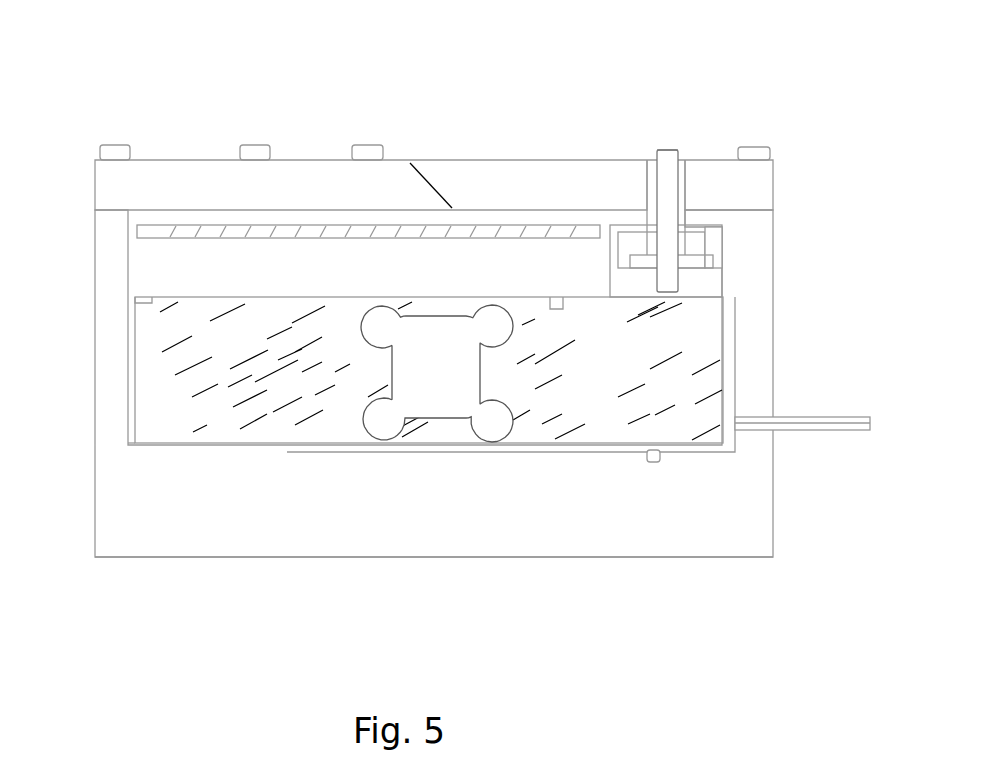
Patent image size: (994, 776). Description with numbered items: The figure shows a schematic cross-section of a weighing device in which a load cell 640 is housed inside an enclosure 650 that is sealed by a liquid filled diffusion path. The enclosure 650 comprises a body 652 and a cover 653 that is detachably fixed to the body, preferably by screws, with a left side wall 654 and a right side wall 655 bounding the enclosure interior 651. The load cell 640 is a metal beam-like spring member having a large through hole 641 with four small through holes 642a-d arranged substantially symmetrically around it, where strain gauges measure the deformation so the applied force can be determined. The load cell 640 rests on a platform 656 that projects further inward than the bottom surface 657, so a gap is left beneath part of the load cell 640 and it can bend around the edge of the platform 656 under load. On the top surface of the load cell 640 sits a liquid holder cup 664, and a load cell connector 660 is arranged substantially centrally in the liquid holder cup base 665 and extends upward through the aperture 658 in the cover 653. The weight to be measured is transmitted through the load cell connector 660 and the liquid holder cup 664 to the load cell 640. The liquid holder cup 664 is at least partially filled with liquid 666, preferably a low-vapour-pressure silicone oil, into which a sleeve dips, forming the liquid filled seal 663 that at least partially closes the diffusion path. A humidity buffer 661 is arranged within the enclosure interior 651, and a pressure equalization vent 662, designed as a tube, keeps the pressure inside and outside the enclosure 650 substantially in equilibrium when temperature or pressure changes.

The enclosure 650 is at (437, 98).
The load cell 640 is at (150, 297).
The large through hole 641 is at (432, 410).
The small through holes 642a-d is at (500, 410).
The enclosure interior 651 is at (269, 282).
The body 652 is at (237, 557).
The cover 653 is at (298, 160).
The left side wall 654 is at (95, 320).
The right side wall 655 is at (775, 322).
The platform 656 is at (132, 443).
The bottom surface 657 is at (650, 463).
The aperture 658 is at (648, 160).
The load cell connector 660 is at (672, 150).
The humidity buffer 661 is at (164, 225).
The pressure equalization vent 662 is at (824, 416).
The liquid filled seal 663 is at (600, 264).
The liquid holder cup 664 is at (686, 172).
The liquid holder cup base 665 is at (697, 272).
The liquid 666 is at (705, 253).